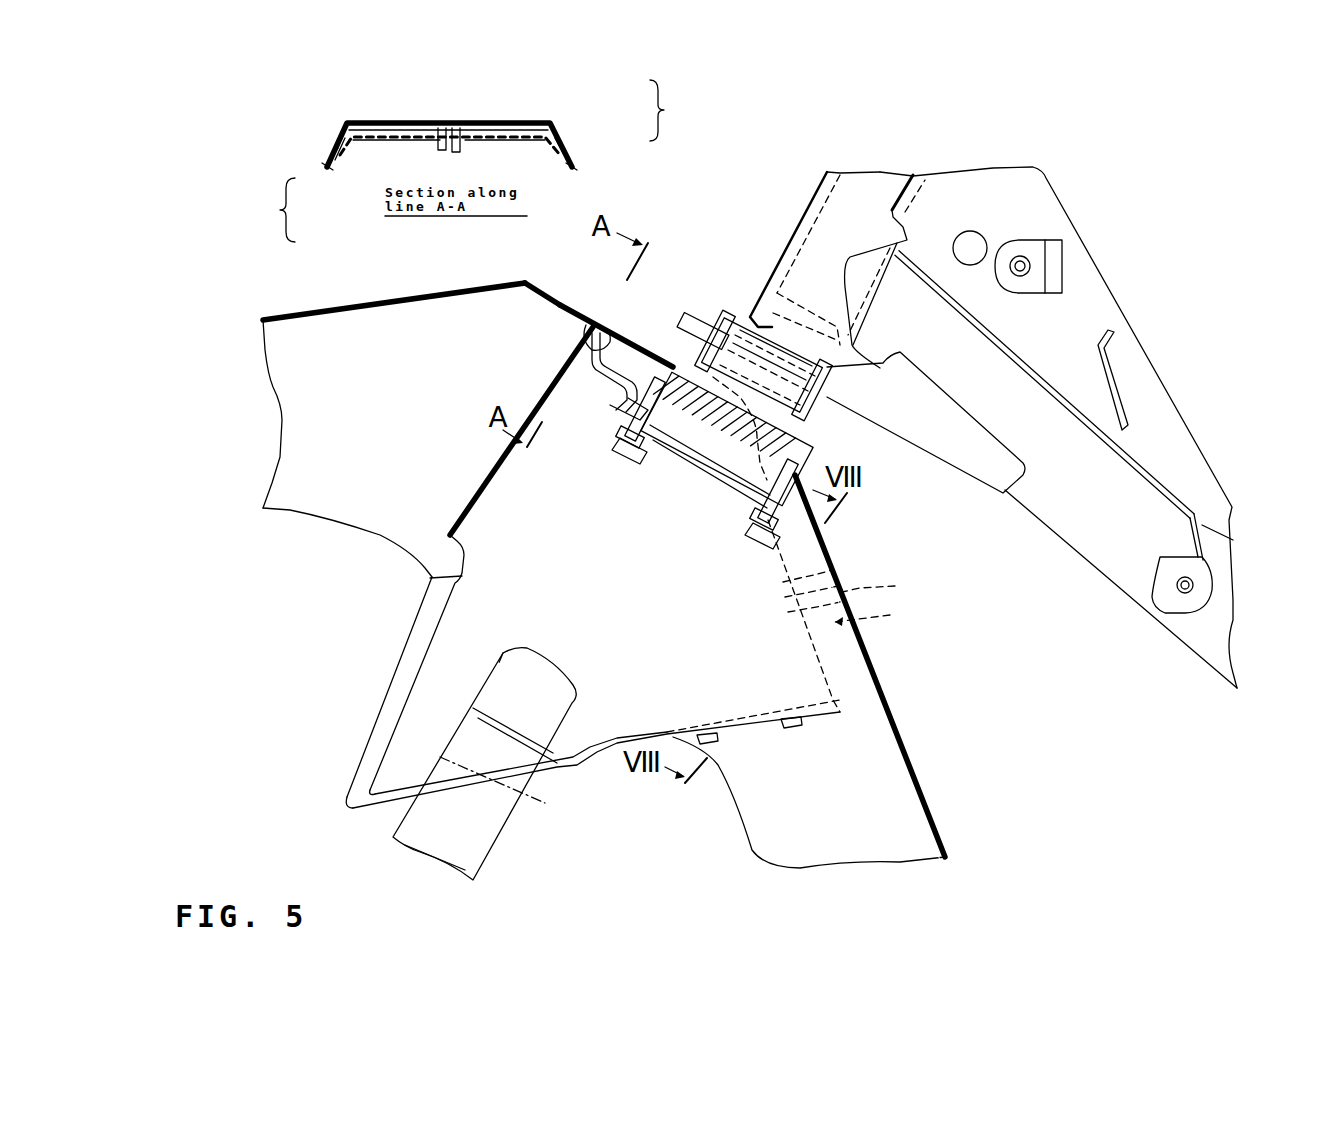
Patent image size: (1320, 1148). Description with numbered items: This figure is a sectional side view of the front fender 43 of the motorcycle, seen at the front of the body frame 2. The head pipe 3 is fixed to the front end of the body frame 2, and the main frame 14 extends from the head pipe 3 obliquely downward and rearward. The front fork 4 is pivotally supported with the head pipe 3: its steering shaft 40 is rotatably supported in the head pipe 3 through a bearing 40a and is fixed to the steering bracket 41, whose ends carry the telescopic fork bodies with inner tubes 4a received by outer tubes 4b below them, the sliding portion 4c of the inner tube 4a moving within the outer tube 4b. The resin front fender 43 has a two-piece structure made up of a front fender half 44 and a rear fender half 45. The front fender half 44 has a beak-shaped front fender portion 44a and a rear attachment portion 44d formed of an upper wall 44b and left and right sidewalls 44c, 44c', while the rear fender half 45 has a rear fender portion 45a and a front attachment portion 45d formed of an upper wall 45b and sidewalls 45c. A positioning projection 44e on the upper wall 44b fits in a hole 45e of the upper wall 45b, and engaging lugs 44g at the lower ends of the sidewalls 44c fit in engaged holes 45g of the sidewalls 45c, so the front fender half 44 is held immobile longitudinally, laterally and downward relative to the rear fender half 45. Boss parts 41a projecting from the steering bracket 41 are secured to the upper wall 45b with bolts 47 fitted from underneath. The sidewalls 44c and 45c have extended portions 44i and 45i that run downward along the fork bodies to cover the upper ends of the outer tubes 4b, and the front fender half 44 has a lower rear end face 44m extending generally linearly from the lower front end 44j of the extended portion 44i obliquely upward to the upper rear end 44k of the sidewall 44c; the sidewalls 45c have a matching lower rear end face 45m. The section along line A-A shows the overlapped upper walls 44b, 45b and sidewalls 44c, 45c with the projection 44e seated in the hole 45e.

The body frame 2 is at (1191, 401).
The head pipe 3 is at (792, 233).
The front fork 4 is at (498, 845).
The inner tube 4a is at (598, 690).
The outer tube 4b is at (530, 830).
The sliding portion 4c is at (486, 660).
The main frame 14 is at (1090, 575).
The steering shaft 40 is at (810, 215).
The bearing 40a is at (720, 305).
The steering bracket 41 is at (813, 459).
The boss part 41a is at (620, 445).
The front fender 43 is at (523, 280).
The front fender half 44 is at (330, 306).
The front fender portion 44a is at (378, 300).
The upper wall 44b is at (543, 122).
The sidewall 44c is at (639, 353).
The cover inner layer portion 44c' is at (844, 574).
The rear attachment portion 44d is at (629, 354).
The positioning projection 44e is at (460, 142).
The engaging lug 44g is at (714, 760).
The extended portion 44i is at (383, 708).
The lower front end 44j is at (340, 806).
The upper rear end 44k is at (865, 700).
The lower rear end face 44m is at (563, 770).
The rear fender half 45 is at (928, 797).
The rear fender portion 45a is at (945, 820).
The upper wall 45b is at (407, 137).
The sidewall 45c is at (343, 165).
The front attachment portion 45d is at (492, 457).
The hole 45e is at (438, 140).
The engaged hole 45g is at (727, 737).
The extended portion 45i is at (378, 752).
The lower rear end face 45m is at (617, 757).
The bolt 47 is at (633, 455).